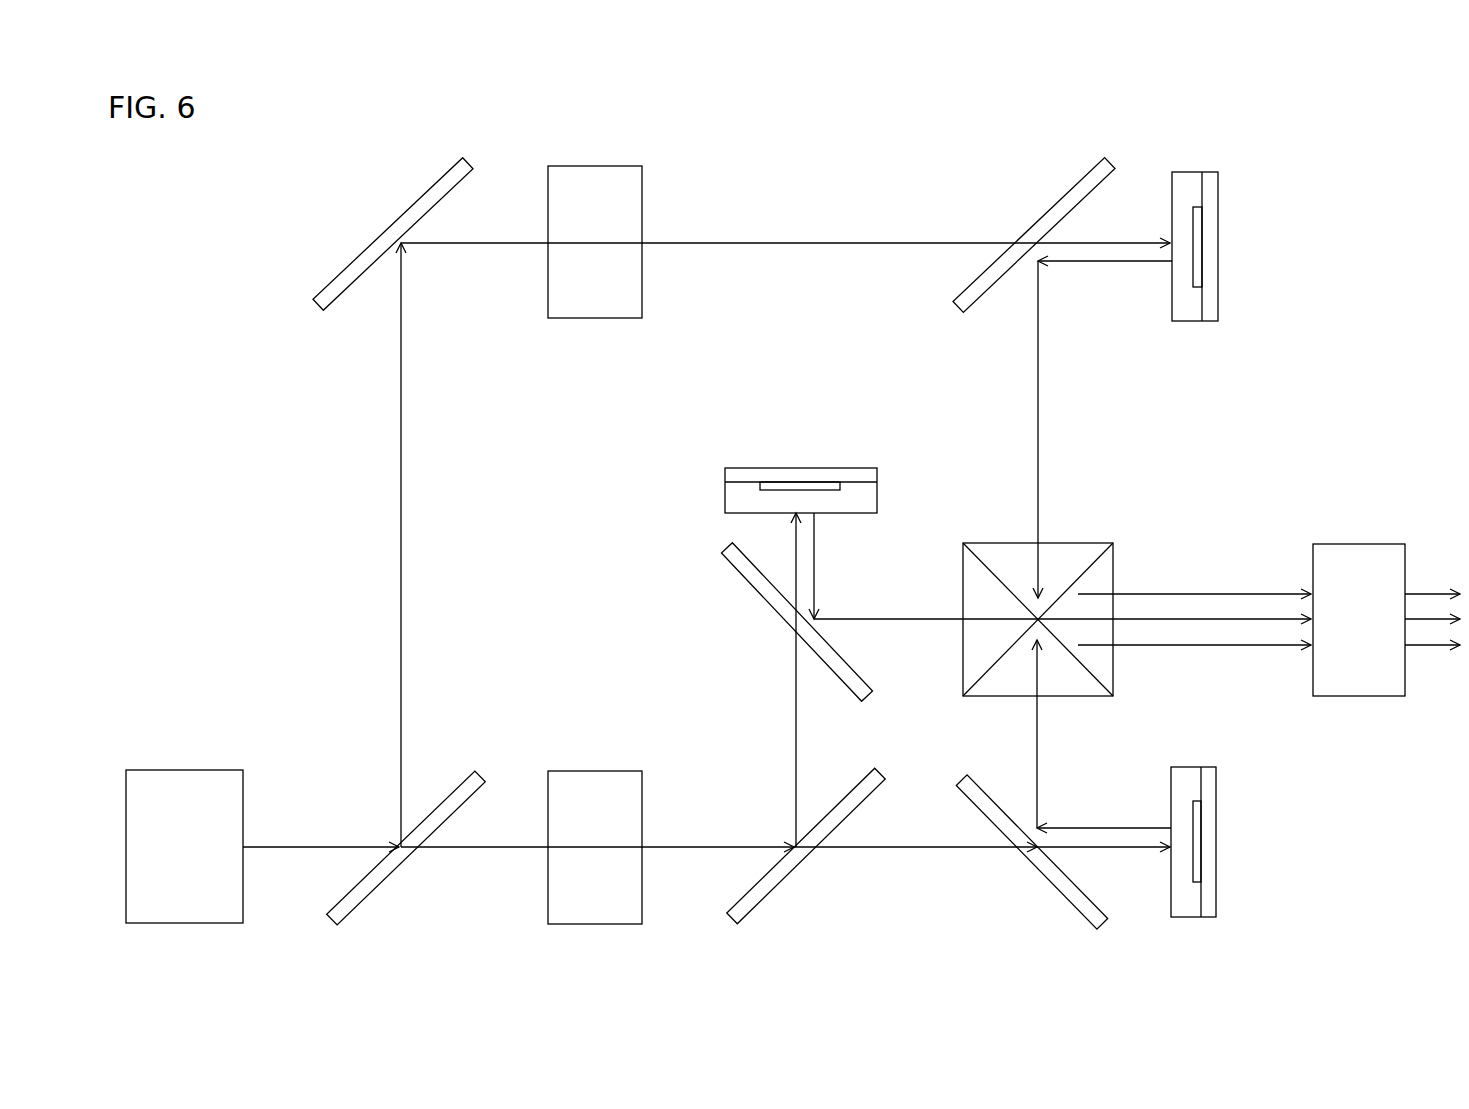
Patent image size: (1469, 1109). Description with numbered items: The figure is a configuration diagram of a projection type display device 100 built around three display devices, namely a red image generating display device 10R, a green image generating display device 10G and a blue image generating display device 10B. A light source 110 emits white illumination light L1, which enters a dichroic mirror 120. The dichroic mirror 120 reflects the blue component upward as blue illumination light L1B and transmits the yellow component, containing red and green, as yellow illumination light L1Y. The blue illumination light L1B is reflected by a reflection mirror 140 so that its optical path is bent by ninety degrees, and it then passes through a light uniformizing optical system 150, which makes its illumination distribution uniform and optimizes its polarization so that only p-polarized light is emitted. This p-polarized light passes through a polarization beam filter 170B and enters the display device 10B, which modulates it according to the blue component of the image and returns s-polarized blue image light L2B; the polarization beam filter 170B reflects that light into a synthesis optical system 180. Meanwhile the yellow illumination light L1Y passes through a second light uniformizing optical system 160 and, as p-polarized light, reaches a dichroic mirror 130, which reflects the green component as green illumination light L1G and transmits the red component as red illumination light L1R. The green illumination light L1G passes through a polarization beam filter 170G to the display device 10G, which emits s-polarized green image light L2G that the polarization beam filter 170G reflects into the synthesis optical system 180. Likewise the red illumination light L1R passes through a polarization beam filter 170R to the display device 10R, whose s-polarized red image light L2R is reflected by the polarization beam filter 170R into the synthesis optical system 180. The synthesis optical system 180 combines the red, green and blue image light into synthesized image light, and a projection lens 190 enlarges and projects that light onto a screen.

The projection type display device 100 is at (1303, 173).
The light source 110 is at (188, 770).
The dichroic mirror 120 is at (455, 785).
The dichroic mirror 130 is at (755, 910).
The reflection mirror 140 is at (355, 268).
The light uniformizing optical system 150 is at (600, 166).
The light uniformizing optical system 160 is at (600, 771).
The polarization beam filter 170B is at (1075, 183).
The polarization beam filter 170G is at (732, 572).
The polarization beam filter 170R is at (1075, 908).
The blue image generating display device 10B is at (1218, 300).
The green image generating display device 10G is at (752, 468).
The red image generating display device 10R is at (1218, 870).
The synthesis optical system 180 is at (1080, 543).
The projection lens 190 is at (1365, 544).
The white illumination light L1 is at (305, 845).
The blue illumination light L1B is at (400, 502).
The yellow illumination light L1Y is at (472, 850).
The green illumination light L1G is at (795, 723).
The red illumination light L1R is at (913, 850).
The blue image light L2B is at (1093, 265).
The green image light L2G is at (815, 563).
The red image light L2R is at (1088, 826).